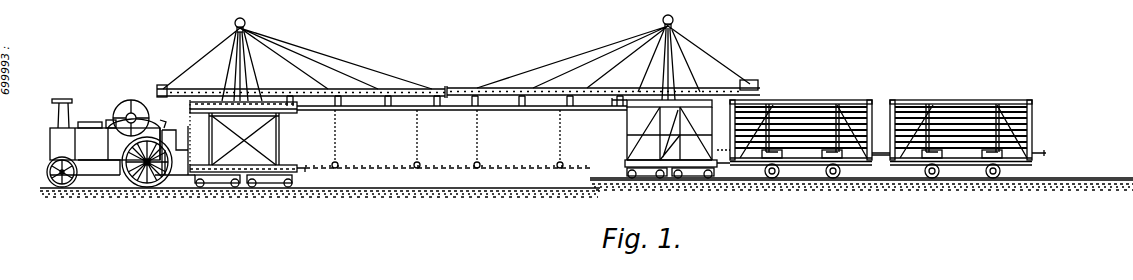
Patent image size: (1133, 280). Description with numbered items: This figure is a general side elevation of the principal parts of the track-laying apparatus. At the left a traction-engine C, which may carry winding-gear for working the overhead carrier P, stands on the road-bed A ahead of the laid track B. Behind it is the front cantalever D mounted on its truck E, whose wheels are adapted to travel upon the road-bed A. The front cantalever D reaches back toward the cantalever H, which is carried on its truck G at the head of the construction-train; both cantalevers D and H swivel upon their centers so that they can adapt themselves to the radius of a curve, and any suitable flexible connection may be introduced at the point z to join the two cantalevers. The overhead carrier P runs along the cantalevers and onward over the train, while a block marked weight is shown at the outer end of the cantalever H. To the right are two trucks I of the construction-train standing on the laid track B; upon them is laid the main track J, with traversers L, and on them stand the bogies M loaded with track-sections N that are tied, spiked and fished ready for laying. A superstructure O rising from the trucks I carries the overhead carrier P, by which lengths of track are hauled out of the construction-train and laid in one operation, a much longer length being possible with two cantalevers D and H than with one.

The road-bed A is at (388, 187).
The laid track B is at (1085, 178).
The traction-engine C is at (121, 143).
The front cantalever D is at (301, 82).
The cantalever-truck E is at (247, 144).
The cantalever-truck G is at (671, 138).
The cantalever H is at (603, 79).
The trucks of the construction-train I is at (800, 167).
The main track J is at (853, 158).
The traversers L is at (822, 158).
The bogies M is at (765, 150).
The track-sections N is at (812, 114).
The superstructure O is at (873, 107).
The overhead carrier P is at (378, 110).
The connection point z is at (450, 90).
The counterweight weight is at (750, 82).